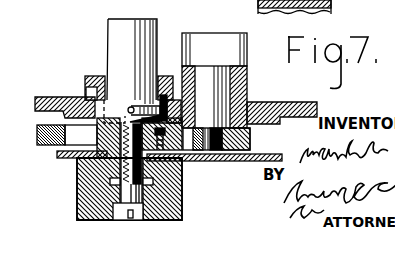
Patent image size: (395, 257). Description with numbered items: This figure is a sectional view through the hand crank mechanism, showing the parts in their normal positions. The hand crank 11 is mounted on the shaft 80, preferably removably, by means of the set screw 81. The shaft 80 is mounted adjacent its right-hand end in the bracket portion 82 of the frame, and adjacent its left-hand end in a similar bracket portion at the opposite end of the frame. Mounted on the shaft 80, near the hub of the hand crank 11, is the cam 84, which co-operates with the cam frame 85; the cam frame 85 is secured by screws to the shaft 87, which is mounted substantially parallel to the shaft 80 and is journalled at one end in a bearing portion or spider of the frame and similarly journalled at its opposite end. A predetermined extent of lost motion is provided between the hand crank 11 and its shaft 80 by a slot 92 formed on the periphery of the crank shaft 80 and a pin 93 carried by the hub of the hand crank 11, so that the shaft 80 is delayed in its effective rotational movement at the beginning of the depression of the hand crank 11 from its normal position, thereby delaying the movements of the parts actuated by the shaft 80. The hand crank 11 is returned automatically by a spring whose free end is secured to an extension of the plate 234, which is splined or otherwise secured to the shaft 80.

The shaft 80 is at (156, 26).
The set screw 81 is at (136, 216).
The bracket portion 82 is at (68, 97).
The cam 84 is at (78, 160).
The cam frame 85 is at (44, 148).
The shaft 87 is at (214, 66).
The slot 92 is at (138, 104).
The pin 93 is at (136, 83).
The hand crank 11 is at (168, 204).
The plate 234 is at (233, 163).